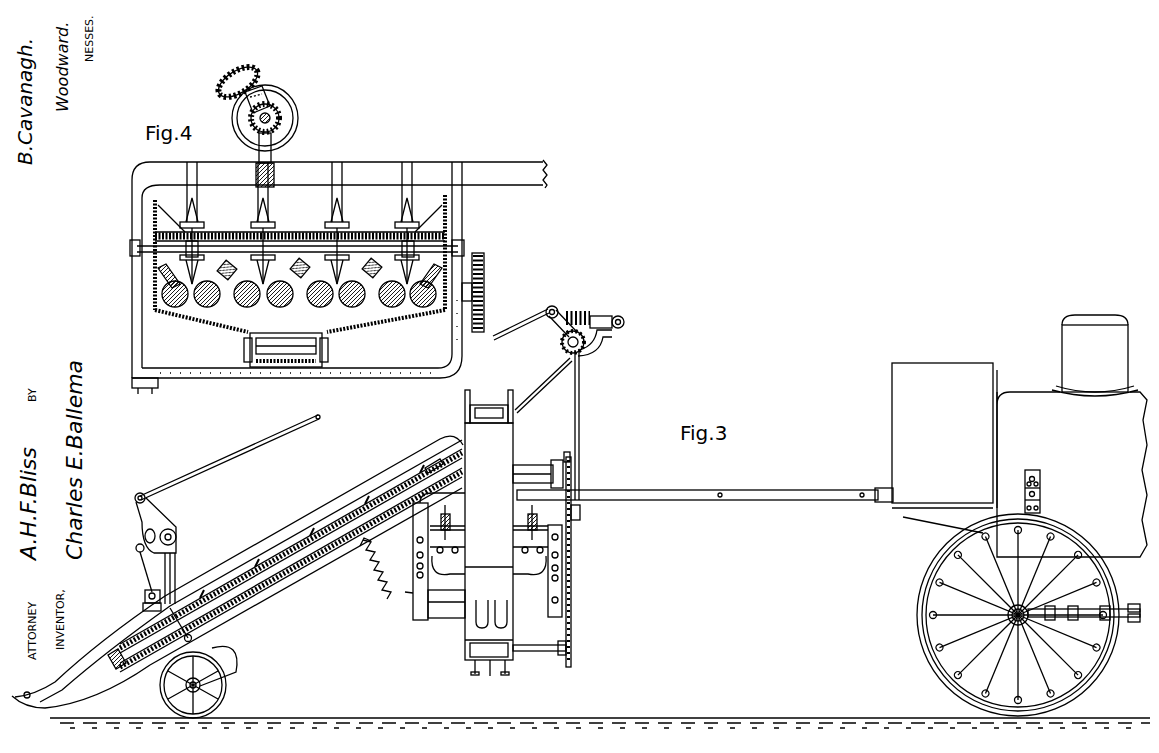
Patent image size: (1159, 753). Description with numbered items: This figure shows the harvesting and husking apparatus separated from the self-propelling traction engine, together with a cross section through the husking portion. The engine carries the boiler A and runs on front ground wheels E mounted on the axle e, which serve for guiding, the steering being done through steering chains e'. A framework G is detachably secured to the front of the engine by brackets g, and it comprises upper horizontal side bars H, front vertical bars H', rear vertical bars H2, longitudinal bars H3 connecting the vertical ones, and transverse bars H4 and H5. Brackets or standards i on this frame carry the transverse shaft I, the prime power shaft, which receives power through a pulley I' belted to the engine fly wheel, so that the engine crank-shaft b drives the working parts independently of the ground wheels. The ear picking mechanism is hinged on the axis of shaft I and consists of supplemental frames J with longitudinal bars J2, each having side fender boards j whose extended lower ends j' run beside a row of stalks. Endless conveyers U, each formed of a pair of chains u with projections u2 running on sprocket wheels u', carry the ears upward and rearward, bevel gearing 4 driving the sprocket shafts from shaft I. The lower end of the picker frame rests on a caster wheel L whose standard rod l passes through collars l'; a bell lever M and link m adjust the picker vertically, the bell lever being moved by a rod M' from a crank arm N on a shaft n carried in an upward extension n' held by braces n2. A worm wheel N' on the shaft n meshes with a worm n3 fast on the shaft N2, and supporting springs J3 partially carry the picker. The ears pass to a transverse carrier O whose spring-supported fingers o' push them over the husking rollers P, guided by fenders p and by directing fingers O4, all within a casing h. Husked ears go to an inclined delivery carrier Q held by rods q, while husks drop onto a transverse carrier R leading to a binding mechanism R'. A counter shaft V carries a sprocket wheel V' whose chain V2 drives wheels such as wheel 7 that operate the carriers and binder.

In FIG. 4, the vertical bars H' is at (326, 269).
In FIG. 3, the vertical bars H' is at (434, 556).
In FIG. 4, the vertical bars H2 is at (462, 352).
In FIG. 3, the vertical bars H2 is at (563, 577).
In FIG. 4, the longitudinal horizontal bars H3 is at (230, 378).
In FIG. 3, the longitudinal horizontal bars H3 is at (455, 616).
In FIG. 4, the transverse bars H4 is at (256, 176).
In FIG. 4, the transverse bars H5 is at (143, 390).
In FIG. 4, the upper horizontal bars H is at (320, 159).
In FIG. 3, the upper horizontal bars H is at (705, 489).
In FIG. 4, the casing h is at (155, 303).
In FIG. 4, the transverse carrier R is at (286, 338).
In FIG. 4, the transverse carrier O is at (297, 232).
In FIG. 4, the carrier fingers o' is at (299, 223).
In FIG. 3, the carrier fingers o' is at (493, 520).
In FIG. 4, the guiding and directing fingers O4 is at (340, 190).
In FIG. 4, the framework G is at (361, 126).
In FIG. 3, the framework G is at (532, 438).
In FIG. 4, the guide boards or fenders p is at (299, 300).
In FIG. 3, the husking mechanism P is at (522, 537).
In FIG. 4, the crank-shaft b is at (299, 267).
In FIG. 3, the crank-shaft b is at (566, 560).
In FIG. 4, the transverse shaft I is at (269, 118).
In FIG. 4, the pulley I' is at (265, 92).
In FIG. 4, the brackets or standards i is at (281, 125).
In FIG. 4, the bevel gearing 4 is at (256, 124).
In FIG. 4, the sprocket wheels u' is at (237, 80).
In FIG. 3, the sprocket wheels u' is at (142, 638).
In FIG. 3, the supplemental frames J is at (239, 569).
In FIG. 3, the side fender boards j is at (263, 526).
In FIG. 3, the extended lower ends j' is at (23, 709).
In FIG. 3, the longitudinal bars J2 is at (304, 598).
In FIG. 3, the supporting springs J3 is at (392, 586).
In FIG. 3, the endless carriers or conveyers U is at (325, 548).
In FIG. 3, the endless chains u is at (237, 598).
In FIG. 3, the projections u2 is at (262, 562).
In FIG. 3, the caster wheel L is at (226, 690).
In FIG. 3, the rod M' is at (349, 399).
In FIG. 3, the bell lever M is at (155, 523).
In FIG. 3, the sleeves or collars l' is at (139, 574).
In FIG. 3, the standard rod l is at (177, 577).
In FIG. 3, the link m is at (145, 580).
In FIG. 3, the inclined delivery carrier Q is at (489, 525).
In FIG. 3, the binding mechanism R' is at (490, 648).
In FIG. 3, the upward extension n' is at (585, 425).
In FIG. 3, the braces n2 is at (548, 367).
In FIG. 3, the shaft n is at (562, 347).
In FIG. 3, the crank arm N is at (555, 327).
In FIG. 3, the worm wheel N' is at (595, 349).
In FIG. 3, the worm n3 is at (578, 306).
In FIG. 3, the shaft N2 is at (607, 311).
In FIG. 3, the counter shaft V is at (538, 466).
In FIG. 3, the sprocket wheel V' is at (568, 448).
In FIG. 3, the sprocket chain V2 is at (574, 620).
In FIG. 3, the wheel 7 is at (571, 660).
In FIG. 3, the rods q is at (580, 517).
In FIG. 3, the boiler A is at (1018, 398).
In FIG. 3, the brackets g is at (1038, 491).
In FIG. 3, the front ground wheels E is at (917, 605).
In FIG. 3, the axle e is at (1018, 615).
In FIG. 3, the steering chains e' is at (1084, 599).